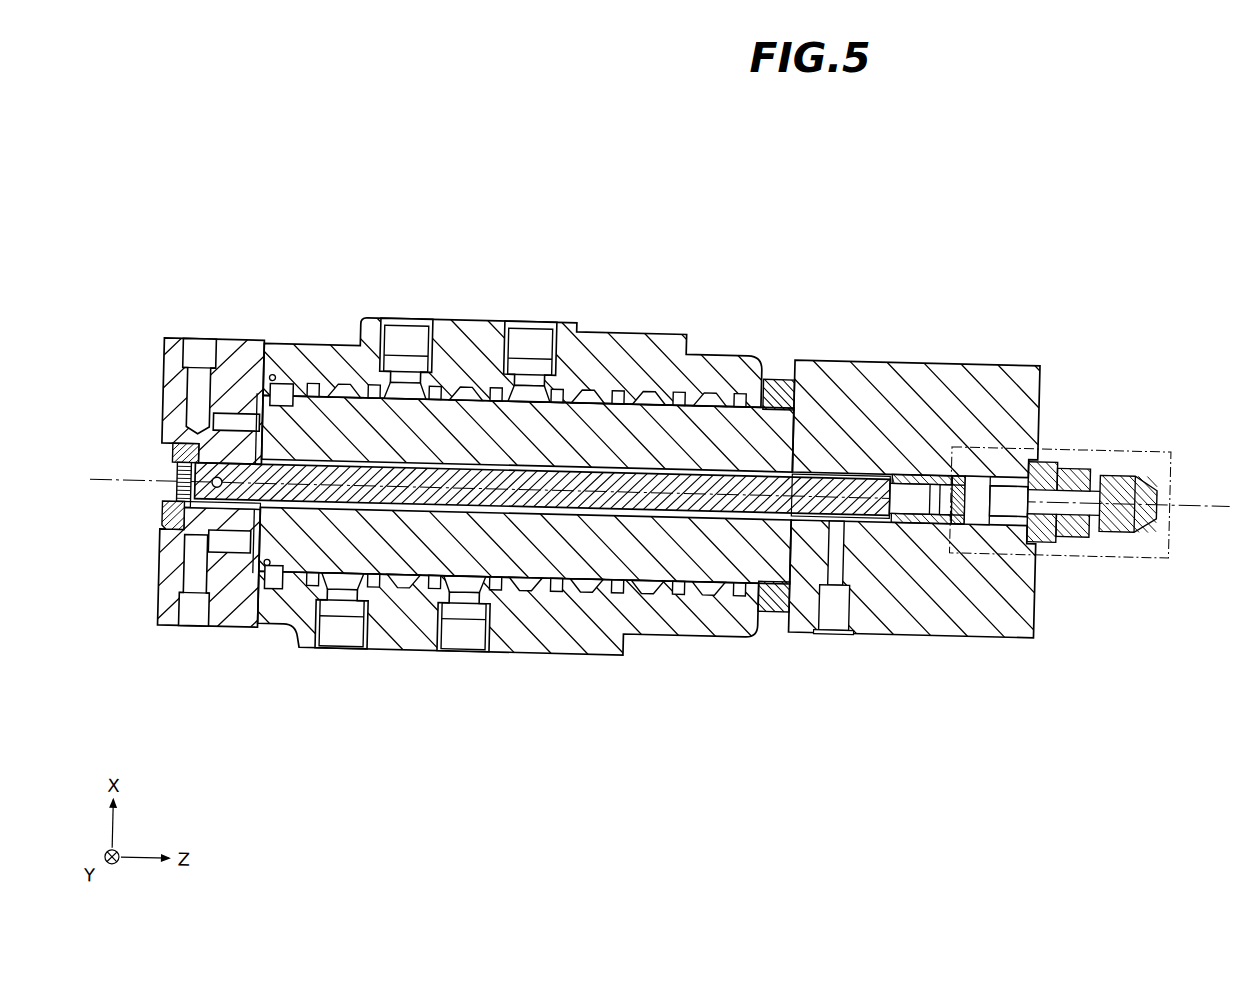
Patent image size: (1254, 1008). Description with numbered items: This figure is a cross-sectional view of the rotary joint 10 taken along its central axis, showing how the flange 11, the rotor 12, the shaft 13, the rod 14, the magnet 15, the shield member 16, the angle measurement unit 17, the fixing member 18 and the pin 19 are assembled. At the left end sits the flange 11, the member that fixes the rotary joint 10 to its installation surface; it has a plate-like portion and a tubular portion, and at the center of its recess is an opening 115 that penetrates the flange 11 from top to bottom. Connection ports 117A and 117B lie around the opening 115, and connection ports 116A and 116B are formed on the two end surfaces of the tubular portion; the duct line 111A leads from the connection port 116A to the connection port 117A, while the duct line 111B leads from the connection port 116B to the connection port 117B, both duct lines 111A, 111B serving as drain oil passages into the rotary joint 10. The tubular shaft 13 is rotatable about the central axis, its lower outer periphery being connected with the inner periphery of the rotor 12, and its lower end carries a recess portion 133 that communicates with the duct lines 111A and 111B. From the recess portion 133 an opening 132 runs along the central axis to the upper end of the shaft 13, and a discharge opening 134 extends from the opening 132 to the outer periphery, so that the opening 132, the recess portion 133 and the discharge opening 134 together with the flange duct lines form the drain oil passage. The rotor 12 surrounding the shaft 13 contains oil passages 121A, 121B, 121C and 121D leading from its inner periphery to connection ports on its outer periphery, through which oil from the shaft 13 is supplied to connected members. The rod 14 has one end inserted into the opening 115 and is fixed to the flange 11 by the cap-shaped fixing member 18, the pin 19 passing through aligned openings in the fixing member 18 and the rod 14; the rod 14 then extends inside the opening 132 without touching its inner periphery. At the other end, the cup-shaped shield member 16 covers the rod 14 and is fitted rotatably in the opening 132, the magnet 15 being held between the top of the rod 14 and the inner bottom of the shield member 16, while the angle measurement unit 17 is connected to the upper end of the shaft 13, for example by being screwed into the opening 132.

The rotary joint 10 is at (664, 477).
The flange 11 is at (183, 459).
The duct line 111A is at (208, 370).
The duct line 111B is at (208, 597).
The connection port 116A is at (200, 326).
The connection port 116B is at (154, 614).
The connection port 117A is at (298, 322).
The connection port 117B is at (280, 642).
The rotor 12 is at (526, 489).
The oil passage 121A is at (358, 653).
The oil passage 121B is at (403, 319).
The oil passage 121C is at (486, 654).
The oil passage 121D is at (539, 321).
The recess portion 133 is at (528, 433).
The rod 14 is at (614, 390).
The opening 115 is at (155, 530).
The shaft 13 is at (915, 463).
The opening 132 is at (842, 406).
The discharge opening 134 is at (821, 609).
The magnet 15 is at (957, 580).
The shield member 16 is at (919, 585).
The angle measurement unit 17 is at (1060, 467).
The fixing member 18 is at (139, 457).
The pin 19 is at (138, 515).